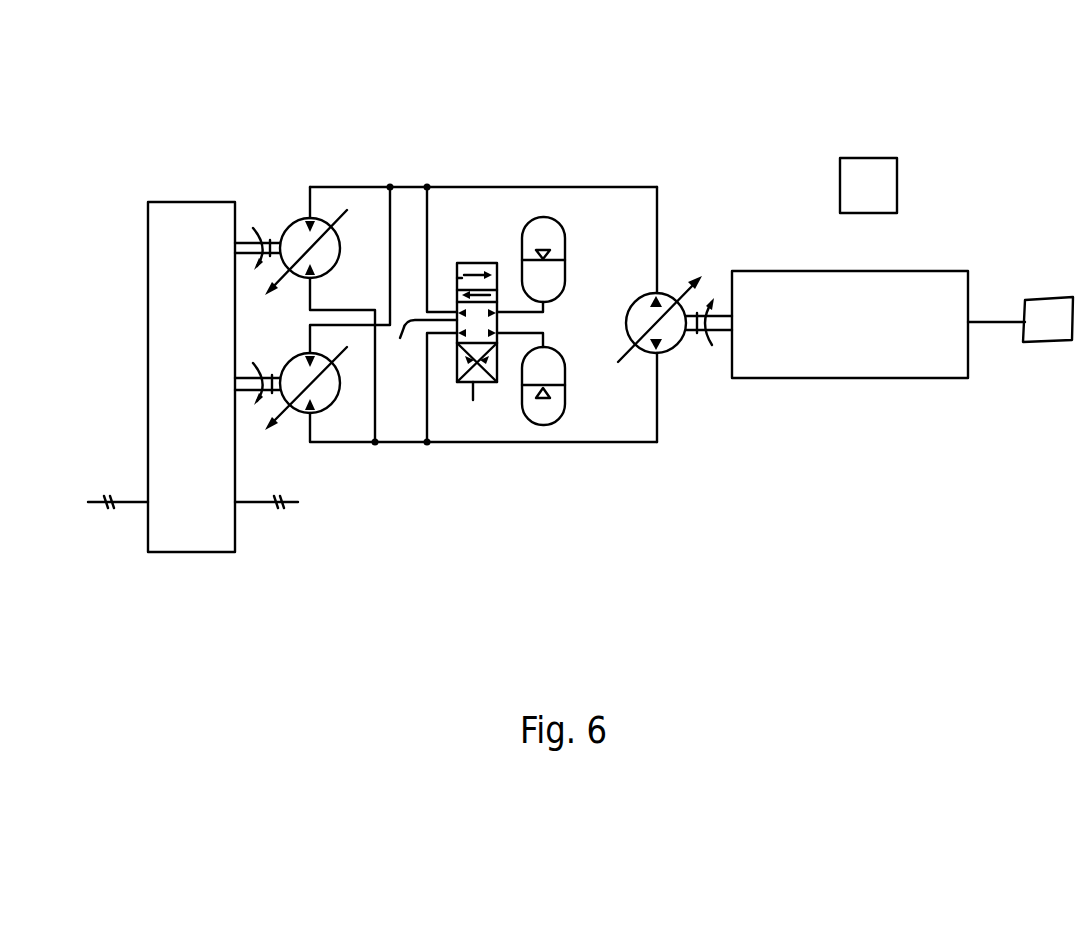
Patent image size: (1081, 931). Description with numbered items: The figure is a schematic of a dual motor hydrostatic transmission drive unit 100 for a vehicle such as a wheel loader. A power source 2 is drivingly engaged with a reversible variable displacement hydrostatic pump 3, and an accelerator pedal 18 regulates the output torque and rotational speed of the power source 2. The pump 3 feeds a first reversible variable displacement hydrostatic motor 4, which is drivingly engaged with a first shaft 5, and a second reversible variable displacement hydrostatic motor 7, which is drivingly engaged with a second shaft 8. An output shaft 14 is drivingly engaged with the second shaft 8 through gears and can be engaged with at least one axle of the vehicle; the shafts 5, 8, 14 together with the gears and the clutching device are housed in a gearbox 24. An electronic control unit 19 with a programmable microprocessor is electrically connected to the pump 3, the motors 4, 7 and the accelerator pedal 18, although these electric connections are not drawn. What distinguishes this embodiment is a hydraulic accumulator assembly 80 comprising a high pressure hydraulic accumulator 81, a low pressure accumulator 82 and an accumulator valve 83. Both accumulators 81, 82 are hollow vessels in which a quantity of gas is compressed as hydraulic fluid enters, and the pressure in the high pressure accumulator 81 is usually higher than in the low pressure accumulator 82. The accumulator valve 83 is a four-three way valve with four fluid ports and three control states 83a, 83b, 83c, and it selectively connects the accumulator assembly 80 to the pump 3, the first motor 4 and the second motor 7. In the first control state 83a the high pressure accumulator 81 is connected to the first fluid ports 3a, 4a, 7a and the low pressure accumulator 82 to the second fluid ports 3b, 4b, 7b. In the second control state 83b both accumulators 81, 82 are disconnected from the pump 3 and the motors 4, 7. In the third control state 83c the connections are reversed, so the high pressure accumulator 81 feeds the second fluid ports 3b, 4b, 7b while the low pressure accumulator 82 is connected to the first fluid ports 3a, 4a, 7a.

The power source 2 is at (870, 380).
The reversible variable displacement hydrostatic pump 3 is at (673, 348).
The first fluid port of the hydrostatic pump 3a is at (660, 293).
The second fluid port of the hydrostatic pump 3b is at (652, 353).
The first reversible variable displacement hydrostatic motor 4 is at (292, 220).
The first fluid port of the first motor 4a is at (312, 224).
The second fluid port of the first motor 4b is at (313, 273).
The first shaft 5 is at (247, 240).
The second reversible variable displacement hydrostatic motor 7 is at (327, 410).
The first fluid port of the second motor 7a is at (306, 354).
The second fluid port of the second motor 7b is at (309, 412).
The second shaft 8 is at (247, 393).
The output shaft 14 is at (130, 505).
The accelerator pedal 18 is at (1048, 343).
The electronic control unit 19 is at (897, 190).
The gearbox 24 is at (148, 280).
The hydraulic accumulator assembly 80 is at (614, 256).
The high pressure hydraulic accumulator 81 is at (550, 217).
The low pressure accumulator 82 is at (555, 425).
The accumulator valve 83 is at (467, 262).
The first control state 83a is at (456, 281).
The second control state 83b is at (420, 347).
The third control state 83c is at (462, 408).
The dual motor drive unit 100 is at (822, 82).